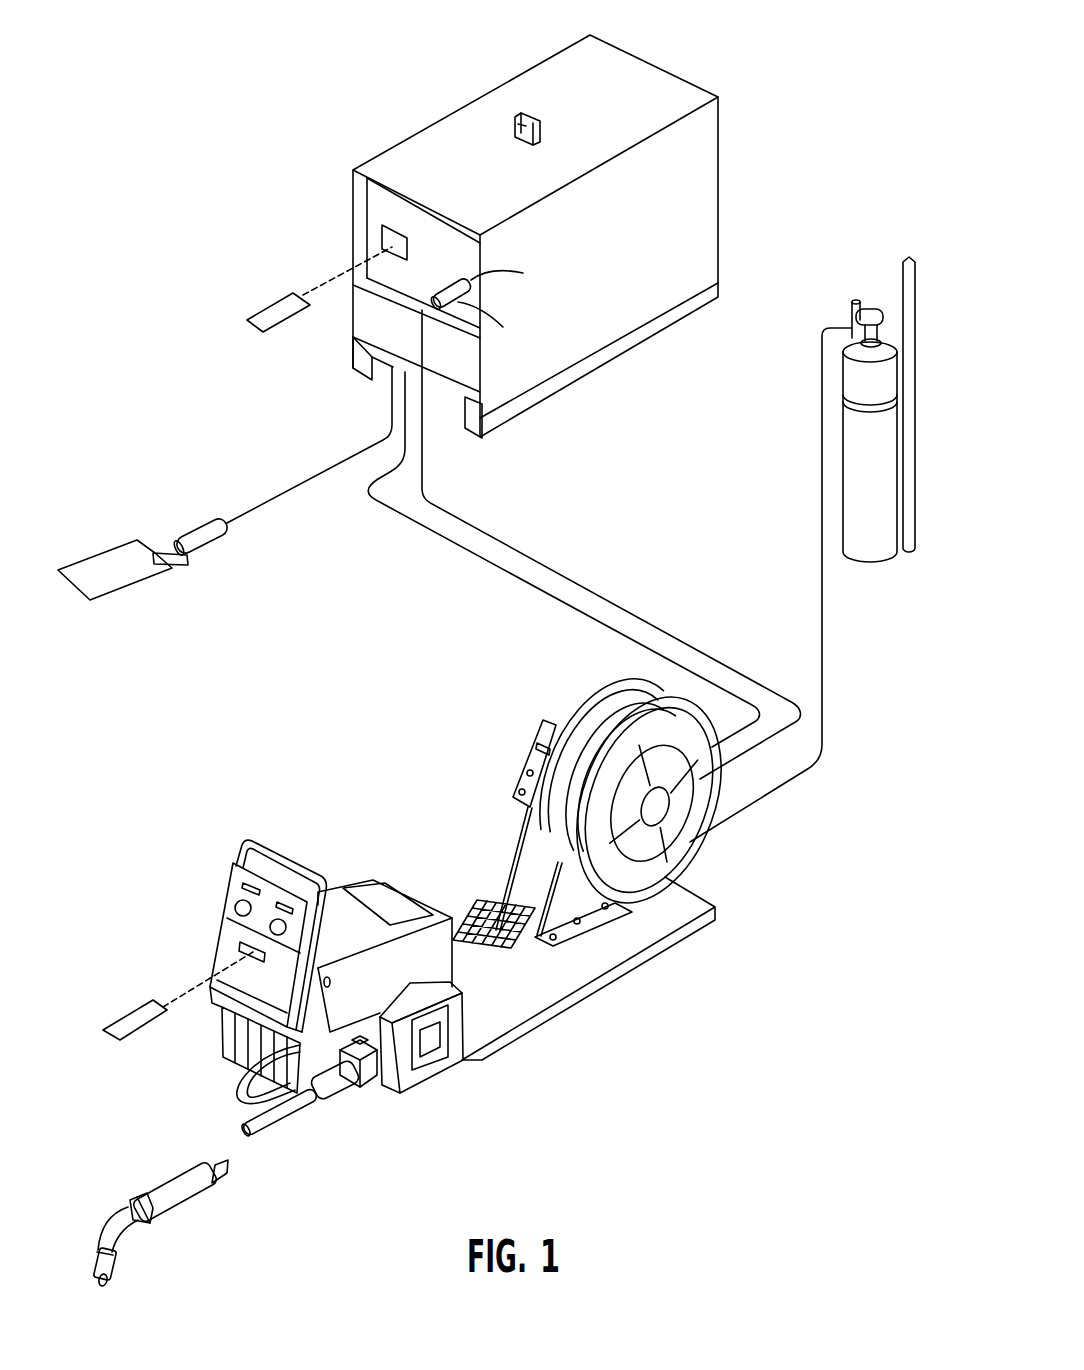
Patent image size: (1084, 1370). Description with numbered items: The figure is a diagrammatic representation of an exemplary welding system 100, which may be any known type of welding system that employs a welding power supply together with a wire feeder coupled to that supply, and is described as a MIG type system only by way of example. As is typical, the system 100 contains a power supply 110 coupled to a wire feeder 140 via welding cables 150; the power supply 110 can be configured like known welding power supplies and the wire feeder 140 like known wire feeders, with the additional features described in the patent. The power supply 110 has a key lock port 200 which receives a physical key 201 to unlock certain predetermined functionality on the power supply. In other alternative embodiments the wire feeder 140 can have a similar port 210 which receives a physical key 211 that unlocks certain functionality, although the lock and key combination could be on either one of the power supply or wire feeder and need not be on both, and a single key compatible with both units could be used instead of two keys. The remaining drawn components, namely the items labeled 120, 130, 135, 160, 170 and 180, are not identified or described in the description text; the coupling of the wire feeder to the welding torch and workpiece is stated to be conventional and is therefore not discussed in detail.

The welding system 100 is at (185, 100).
The power supply 110 is at (673, 73).
The gas cylinder 120 is at (938, 235).
The welding torch 130 is at (177, 1195).
The torch cable connector 135 is at (300, 1105).
The wire feeder 140 is at (294, 810).
The welding cables 150 is at (420, 870).
The wire spool 160 is at (621, 655).
The connector block 170 is at (430, 1060).
The work clamp 180 is at (102, 552).
The key lock port 200 is at (380, 240).
The physical key 201 is at (267, 307).
The port 210 is at (238, 948).
The physical key 211 is at (122, 998).